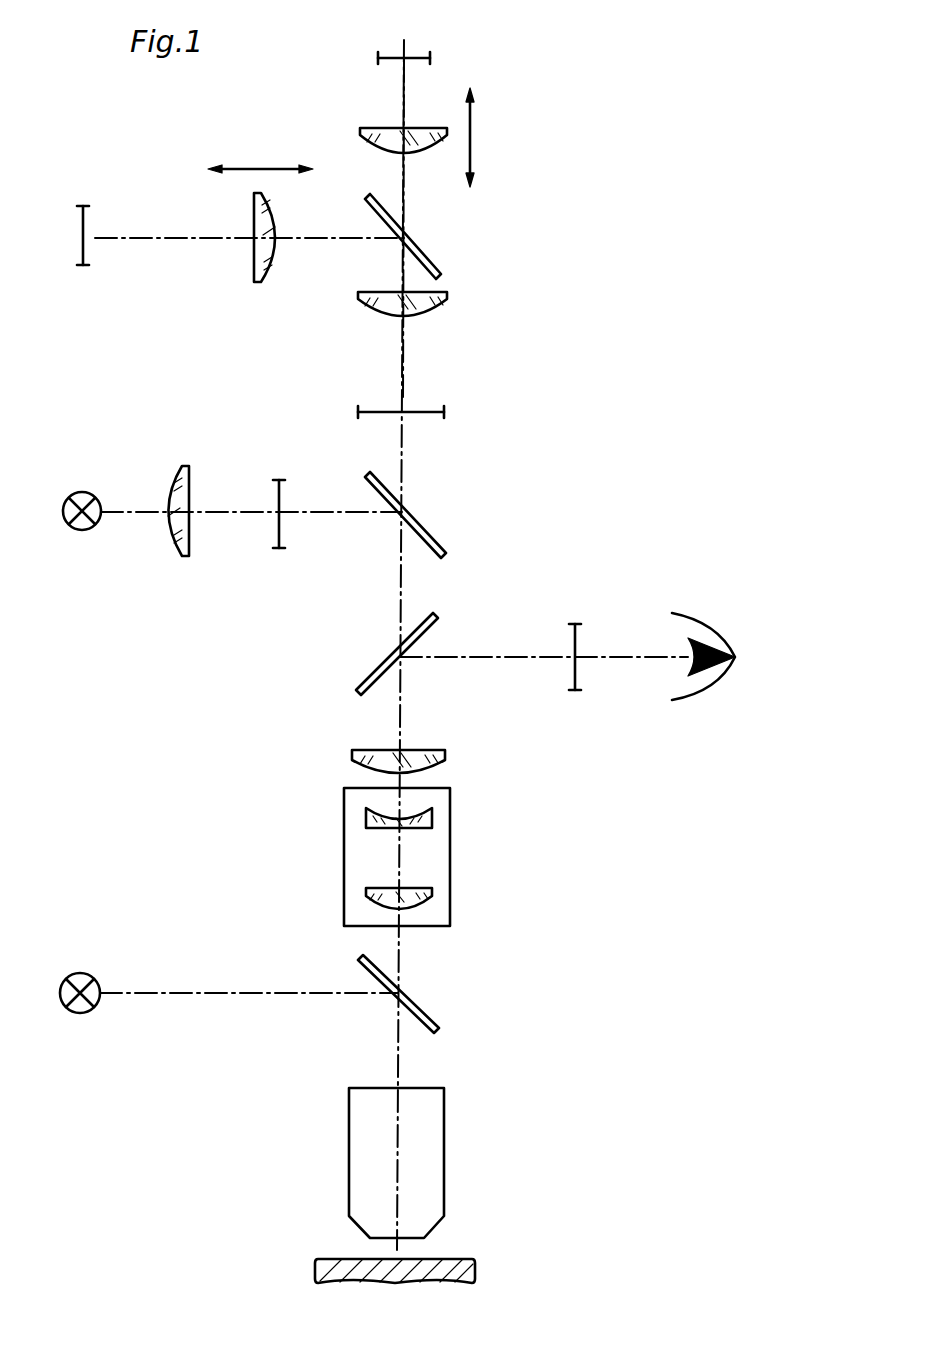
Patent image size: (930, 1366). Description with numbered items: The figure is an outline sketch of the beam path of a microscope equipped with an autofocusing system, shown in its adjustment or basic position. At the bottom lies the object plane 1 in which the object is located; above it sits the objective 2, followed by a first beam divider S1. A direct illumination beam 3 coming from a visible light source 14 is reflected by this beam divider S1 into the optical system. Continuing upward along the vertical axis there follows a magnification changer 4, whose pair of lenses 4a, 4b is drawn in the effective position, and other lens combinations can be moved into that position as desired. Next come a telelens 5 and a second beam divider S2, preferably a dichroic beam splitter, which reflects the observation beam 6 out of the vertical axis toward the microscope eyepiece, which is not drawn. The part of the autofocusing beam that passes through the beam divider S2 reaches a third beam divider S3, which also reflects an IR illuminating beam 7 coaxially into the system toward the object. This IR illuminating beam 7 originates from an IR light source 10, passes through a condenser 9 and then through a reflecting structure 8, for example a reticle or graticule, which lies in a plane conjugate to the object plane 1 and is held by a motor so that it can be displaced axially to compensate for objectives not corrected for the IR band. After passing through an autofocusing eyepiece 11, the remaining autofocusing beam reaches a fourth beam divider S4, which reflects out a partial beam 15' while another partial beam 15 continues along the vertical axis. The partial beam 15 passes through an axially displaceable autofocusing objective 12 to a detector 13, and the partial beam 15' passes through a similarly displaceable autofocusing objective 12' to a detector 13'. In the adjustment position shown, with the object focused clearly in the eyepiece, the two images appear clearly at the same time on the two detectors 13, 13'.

The object plane 1 is at (348, 1262).
The objective 2 is at (434, 1120).
The direct illumination beam 3 is at (195, 995).
The magnification changer 4 is at (345, 845).
The lens of the magnification changer 4a is at (426, 816).
The lens of the magnification changer 4b is at (426, 896).
The telelens 5 is at (351, 752).
The observation beam 6 is at (514, 658).
The IR illuminating beam 7 is at (334, 514).
The reflecting structure 8 is at (278, 530).
The condenser 9 is at (168, 525).
The IR light source 10 is at (78, 527).
The autofocusing eyepiece 11 is at (424, 305).
The autofocusing objective 12 is at (372, 114).
The detector 13 is at (454, 33).
The autofocusing objective 12' is at (231, 262).
The detector 13' is at (58, 269).
The visible light source 14 is at (80, 1013).
The partial beam 15 is at (469, 230).
The partial beam 15' is at (249, 285).
The first beam divider S1 is at (412, 1003).
The second beam divider S2 is at (370, 668).
The third beam divider S3 is at (420, 527).
The fourth beam divider S4 is at (428, 255).